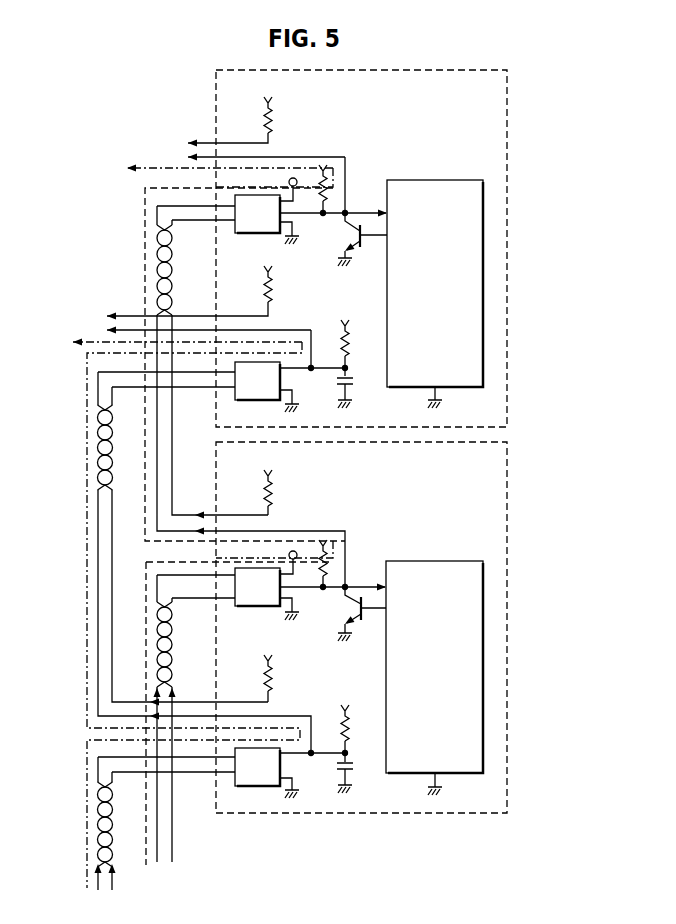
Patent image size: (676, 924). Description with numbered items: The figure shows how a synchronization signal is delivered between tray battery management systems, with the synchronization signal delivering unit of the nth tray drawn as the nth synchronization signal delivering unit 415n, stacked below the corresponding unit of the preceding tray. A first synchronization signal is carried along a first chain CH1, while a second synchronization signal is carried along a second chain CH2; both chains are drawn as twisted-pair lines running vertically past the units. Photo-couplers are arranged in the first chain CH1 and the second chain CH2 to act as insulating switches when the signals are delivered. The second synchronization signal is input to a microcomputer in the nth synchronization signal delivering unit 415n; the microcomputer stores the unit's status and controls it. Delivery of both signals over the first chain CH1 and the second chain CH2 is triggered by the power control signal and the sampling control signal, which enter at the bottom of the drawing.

The nth synchronization signal delivering unit 415n is at (507, 495).
The first chain CH1 is at (87, 551).
The second chain CH2 is at (145, 255).